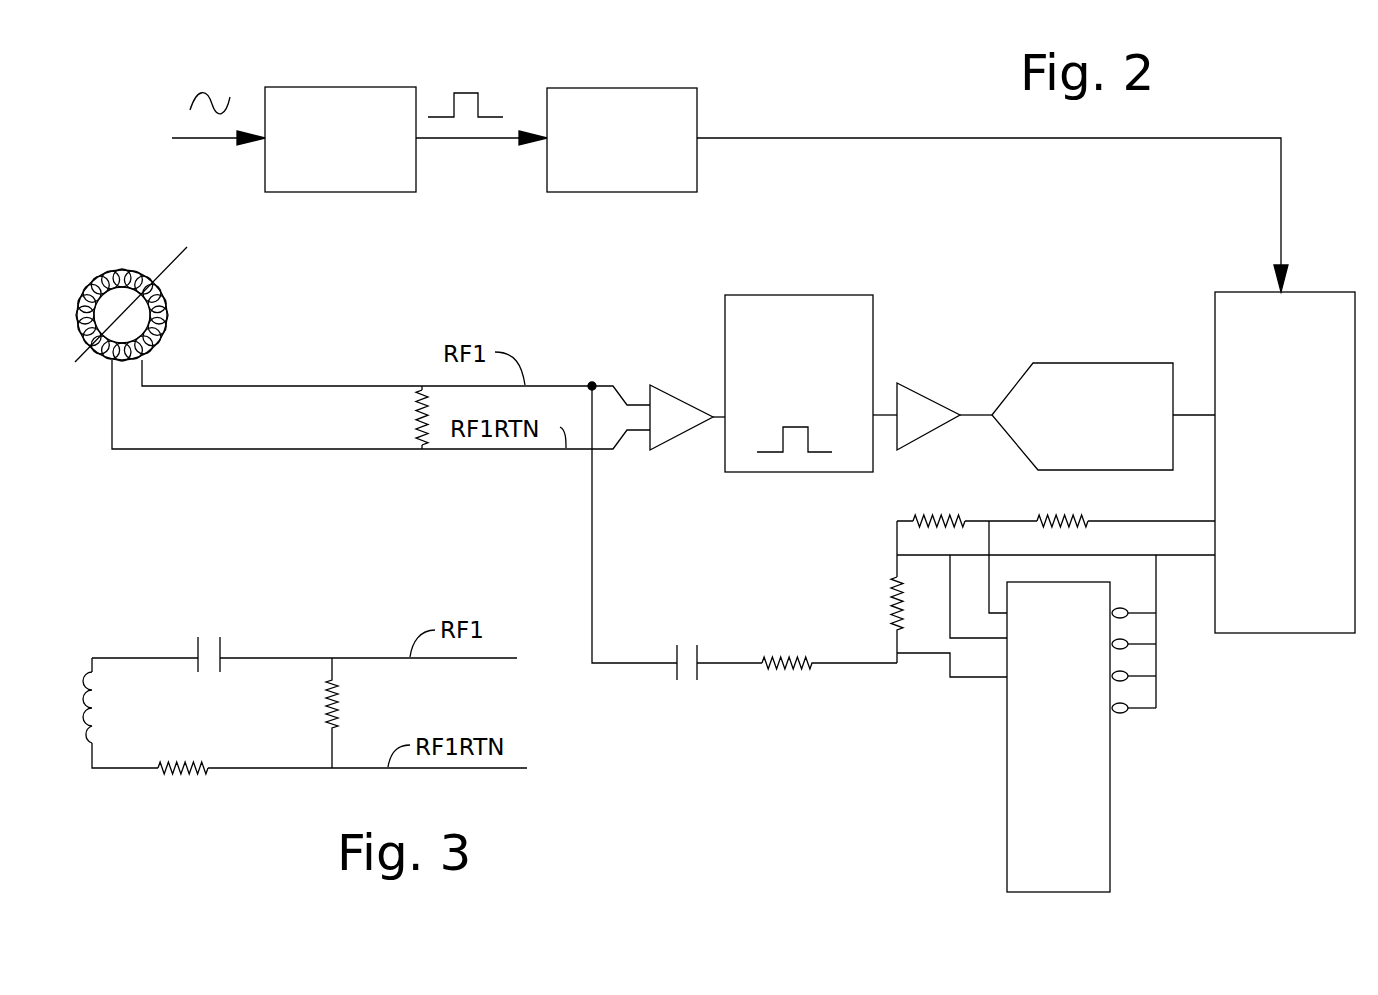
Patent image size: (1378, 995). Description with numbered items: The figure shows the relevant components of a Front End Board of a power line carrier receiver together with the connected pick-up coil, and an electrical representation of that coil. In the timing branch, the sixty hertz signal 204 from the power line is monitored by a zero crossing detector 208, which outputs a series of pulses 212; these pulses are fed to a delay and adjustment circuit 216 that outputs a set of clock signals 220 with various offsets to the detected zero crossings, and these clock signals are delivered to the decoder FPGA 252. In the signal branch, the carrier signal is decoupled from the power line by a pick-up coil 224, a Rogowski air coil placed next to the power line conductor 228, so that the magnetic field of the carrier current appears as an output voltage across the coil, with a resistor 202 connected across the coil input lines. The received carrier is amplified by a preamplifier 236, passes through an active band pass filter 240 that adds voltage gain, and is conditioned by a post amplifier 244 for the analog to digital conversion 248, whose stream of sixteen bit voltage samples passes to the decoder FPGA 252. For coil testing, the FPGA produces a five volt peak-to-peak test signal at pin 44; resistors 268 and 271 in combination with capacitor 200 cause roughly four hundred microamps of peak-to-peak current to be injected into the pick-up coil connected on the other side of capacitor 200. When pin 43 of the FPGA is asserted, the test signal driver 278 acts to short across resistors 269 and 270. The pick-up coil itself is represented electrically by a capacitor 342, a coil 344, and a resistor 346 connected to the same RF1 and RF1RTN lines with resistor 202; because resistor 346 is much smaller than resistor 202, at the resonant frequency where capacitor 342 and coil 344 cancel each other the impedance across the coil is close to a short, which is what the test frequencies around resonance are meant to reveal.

In FIG. 2, the 60 Hz signal 204 is at (215, 95).
In FIG. 2, the zero crossing detector 208 is at (357, 192).
In FIG. 2, the series of pulses 212 is at (458, 92).
In FIG. 2, the delay and adjustment circuit 216 is at (640, 192).
In FIG. 2, the set of clock signals 220 is at (903, 137).
In FIG. 2, the pick-up coil 224 is at (167, 325).
In FIG. 2, the power line conductor 228 is at (173, 260).
In FIG. 2, the resistor 202 is at (412, 416).
In FIG. 3, the resistor 202 is at (343, 718).
In FIG. 2, the preamplifier 236 is at (667, 387).
In FIG. 2, the active band pass filter 240 is at (772, 295).
In FIG. 2, the post amplifier 244 is at (930, 397).
In FIG. 2, the analog to digital conversion 248 is at (1060, 363).
In FIG. 2, the decoder FPGA 252 is at (1257, 633).
In FIG. 2, the pin 44 is at (1210, 520).
In FIG. 2, the pin 43 is at (1202, 558).
In FIG. 2, the resistor 269 is at (945, 513).
In FIG. 2, the resistor 268 is at (1068, 513).
In FIG. 2, the resistor 270 is at (890, 605).
In FIG. 2, the resistor 271 is at (790, 670).
In FIG. 2, the capacitor 200 is at (685, 645).
In FIG. 2, the test signal driver 278 is at (1110, 837).
In FIG. 3, the capacitor 342 is at (210, 637).
In FIG. 3, the coil 344 is at (92, 718).
In FIG. 3, the resistor 346 is at (200, 777).